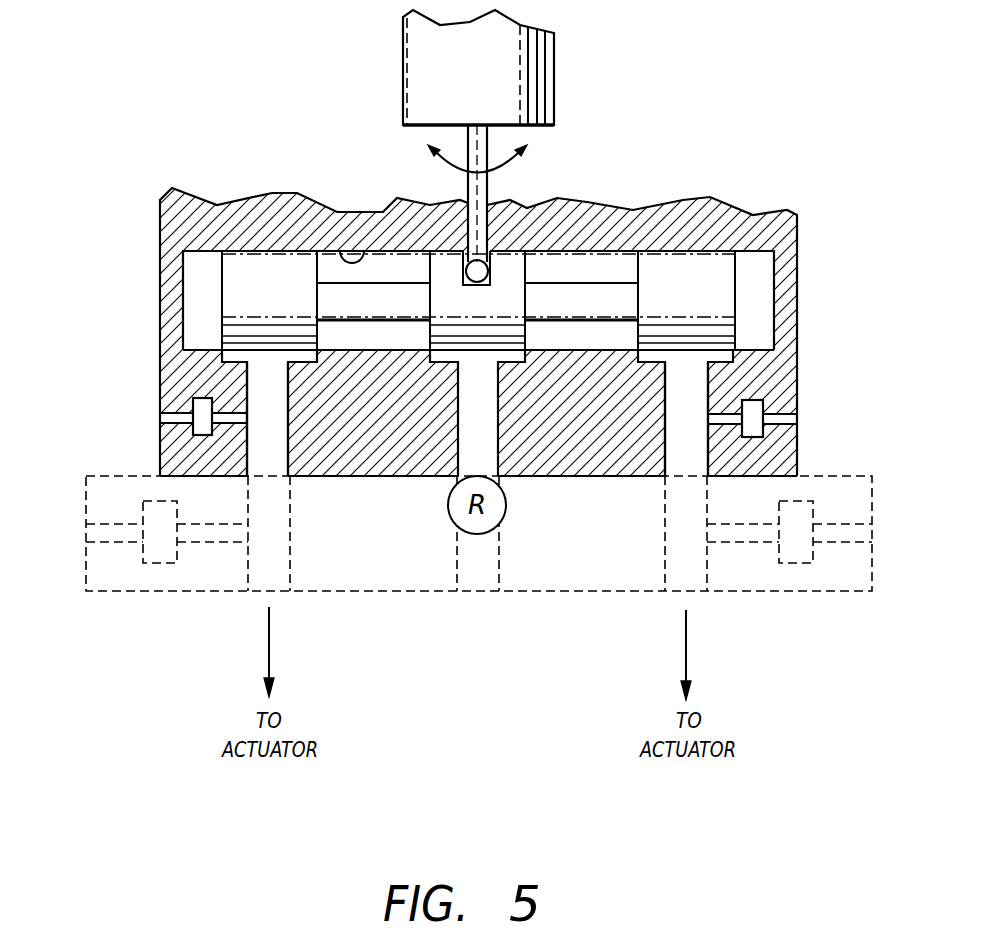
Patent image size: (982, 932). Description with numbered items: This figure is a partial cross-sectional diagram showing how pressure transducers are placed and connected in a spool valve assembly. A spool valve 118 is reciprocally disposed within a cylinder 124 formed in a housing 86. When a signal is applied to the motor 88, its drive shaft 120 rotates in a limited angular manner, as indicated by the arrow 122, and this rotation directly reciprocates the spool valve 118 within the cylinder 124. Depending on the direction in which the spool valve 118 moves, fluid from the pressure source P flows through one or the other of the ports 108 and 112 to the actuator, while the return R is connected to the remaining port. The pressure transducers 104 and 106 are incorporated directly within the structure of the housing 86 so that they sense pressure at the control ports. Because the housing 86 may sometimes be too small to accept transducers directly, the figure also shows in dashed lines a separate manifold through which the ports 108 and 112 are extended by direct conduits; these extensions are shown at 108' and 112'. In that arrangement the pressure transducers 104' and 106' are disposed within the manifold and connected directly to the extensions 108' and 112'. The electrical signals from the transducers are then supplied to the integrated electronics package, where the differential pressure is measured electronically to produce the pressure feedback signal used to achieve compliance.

The housing 86 is at (761, 258).
The motor 88 is at (400, 58).
The pressure transducer 104 is at (139, 393).
The pressure transducer 106 is at (816, 392).
The port 108 is at (187, 382).
The port 112 is at (779, 394).
The spool valve 118 is at (680, 268).
The drive shaft 120 is at (466, 207).
The arrow 122 is at (507, 163).
The cylinder 124 is at (335, 250).
The pressure transducer 104' is at (145, 498).
The pressure transducer 106' is at (789, 583).
The control port extension 108' is at (242, 574).
The control port extension 112' is at (715, 576).